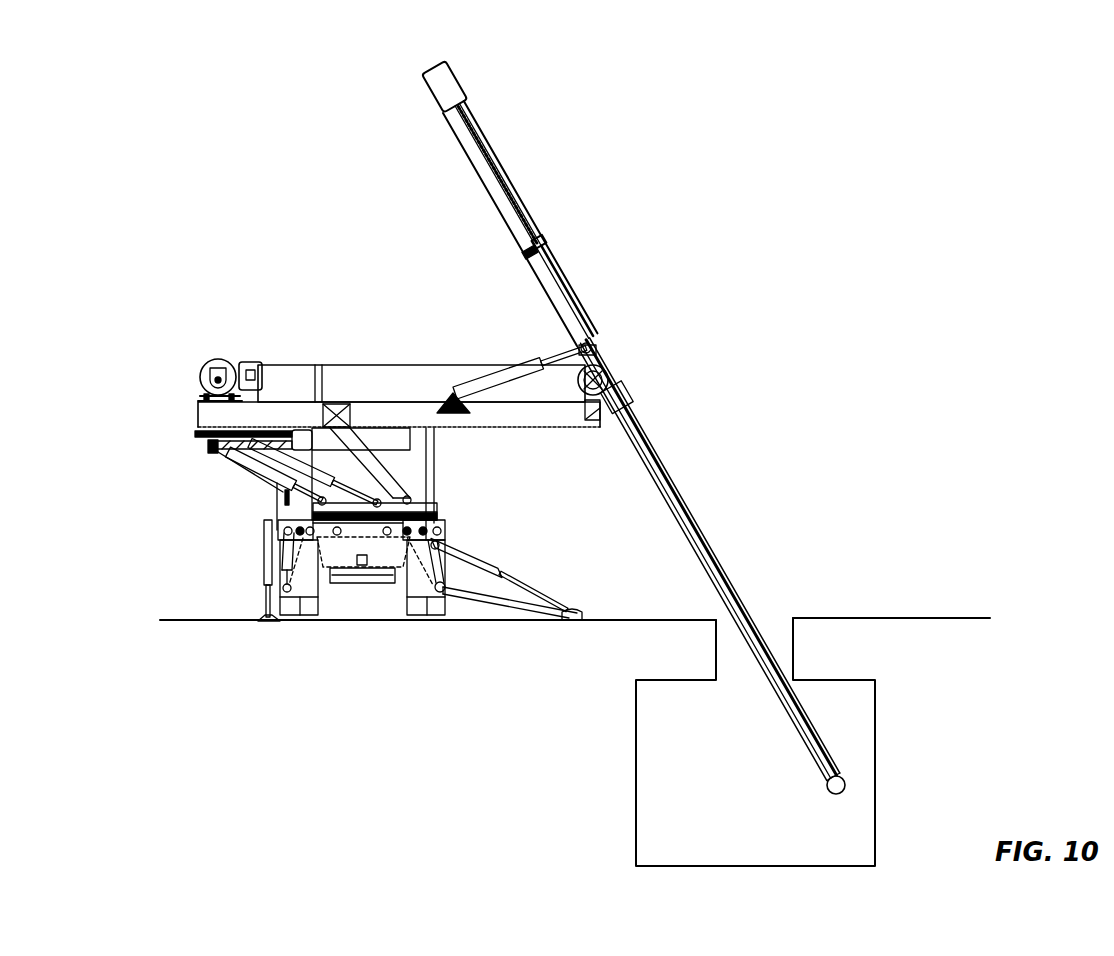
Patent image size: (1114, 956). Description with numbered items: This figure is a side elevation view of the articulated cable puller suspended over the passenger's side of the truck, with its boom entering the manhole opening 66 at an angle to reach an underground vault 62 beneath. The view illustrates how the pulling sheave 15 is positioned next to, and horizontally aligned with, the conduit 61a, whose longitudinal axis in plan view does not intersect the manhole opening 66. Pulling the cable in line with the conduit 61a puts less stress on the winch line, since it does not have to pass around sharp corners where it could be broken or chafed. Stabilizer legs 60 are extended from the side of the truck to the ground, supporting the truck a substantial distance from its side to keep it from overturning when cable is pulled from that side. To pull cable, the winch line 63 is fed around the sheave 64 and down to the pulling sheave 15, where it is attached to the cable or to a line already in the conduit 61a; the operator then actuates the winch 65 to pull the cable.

The pulling sheave 15 is at (830, 760).
The stabilizer legs 60 is at (266, 543).
The conduit 61a is at (843, 780).
The underground vault 62 is at (873, 697).
The winch line 63 is at (410, 364).
The sheave 64 is at (612, 365).
The winch 65 is at (243, 358).
The manhole opening 66 is at (790, 628).